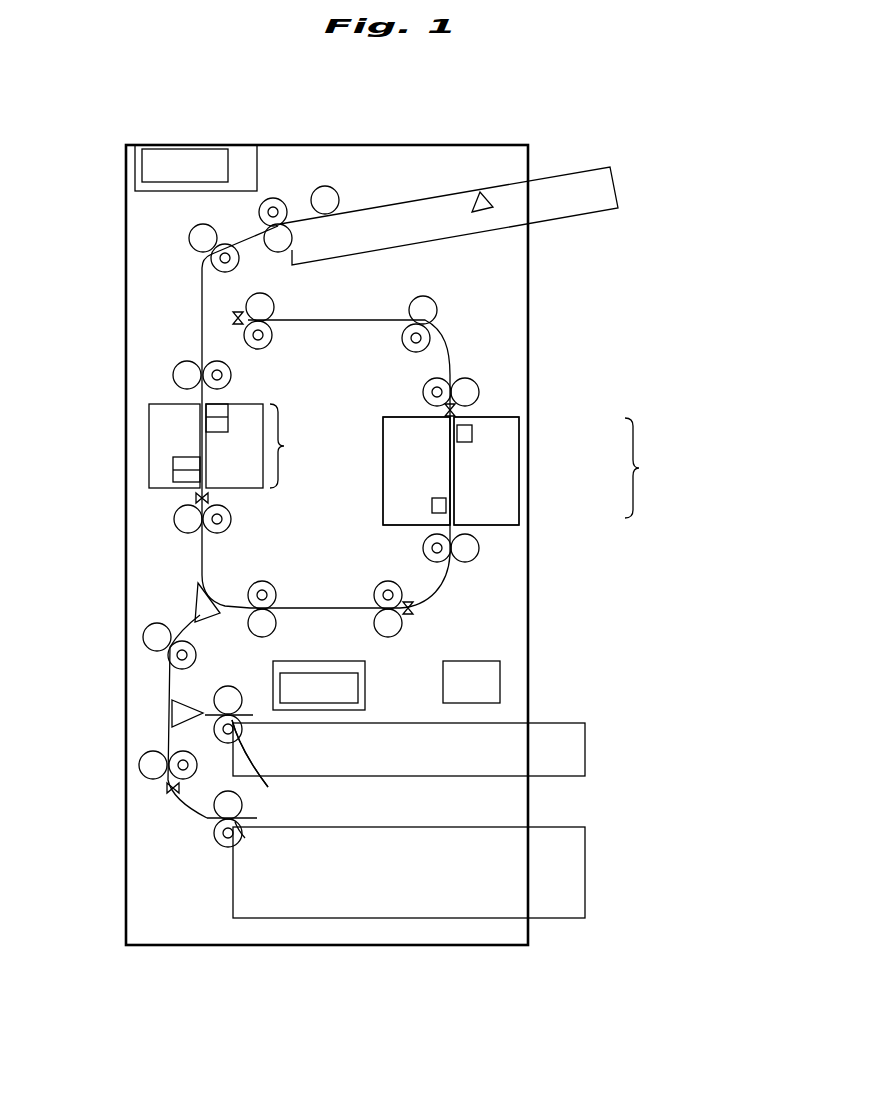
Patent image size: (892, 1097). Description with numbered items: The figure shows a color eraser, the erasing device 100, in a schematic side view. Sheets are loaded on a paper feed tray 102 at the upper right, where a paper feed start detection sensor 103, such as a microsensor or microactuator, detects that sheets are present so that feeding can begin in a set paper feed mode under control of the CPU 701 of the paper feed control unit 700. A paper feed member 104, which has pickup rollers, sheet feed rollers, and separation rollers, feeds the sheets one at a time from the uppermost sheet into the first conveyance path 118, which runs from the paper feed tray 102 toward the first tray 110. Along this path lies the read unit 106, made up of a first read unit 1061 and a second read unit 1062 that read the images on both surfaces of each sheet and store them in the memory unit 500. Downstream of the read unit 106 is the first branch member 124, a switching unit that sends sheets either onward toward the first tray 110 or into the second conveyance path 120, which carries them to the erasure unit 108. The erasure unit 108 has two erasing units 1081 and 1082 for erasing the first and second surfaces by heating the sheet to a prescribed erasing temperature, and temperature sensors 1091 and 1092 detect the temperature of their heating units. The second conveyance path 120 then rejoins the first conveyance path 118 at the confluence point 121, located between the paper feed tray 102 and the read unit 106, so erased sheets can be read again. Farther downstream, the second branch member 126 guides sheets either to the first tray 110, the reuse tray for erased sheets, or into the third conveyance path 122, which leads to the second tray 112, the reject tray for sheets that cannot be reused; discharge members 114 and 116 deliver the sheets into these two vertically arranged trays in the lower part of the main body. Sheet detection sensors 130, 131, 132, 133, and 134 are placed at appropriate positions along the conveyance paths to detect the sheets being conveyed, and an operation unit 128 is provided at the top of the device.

The erasing device 100 is at (655, 236).
The paper feed tray 102 is at (573, 166).
The paper feed start detection sensor 103 is at (481, 190).
The paper feed member 104 is at (273, 197).
The read unit 106 is at (190, 424).
The first read unit 1061 is at (174, 470).
The second read unit 1062 is at (202, 421).
The erasure unit 108 is at (496, 451).
The erasing unit 1081 is at (452, 468).
The erasing unit 1082 is at (510, 480).
The temperature sensor 1091 is at (432, 503).
The temperature sensor 1092 is at (472, 427).
The first tray 110 is at (585, 746).
The second tray 112 is at (585, 864).
The discharge member 114 is at (258, 770).
The discharge member 116 is at (212, 834).
The first conveyance path 118 is at (200, 269).
The second conveyance path 120 is at (302, 608).
The confluence point 121 is at (186, 374).
The third conveyance path 122 is at (167, 741).
The first branch member 124 is at (196, 591).
The second branch member 126 is at (172, 714).
The operation unit 128 is at (192, 165).
The sheet detection sensor 130 is at (196, 499).
The sheet detection sensor 131 is at (408, 627).
The sheet detection sensor 132 is at (470, 405).
The sheet detection sensor 133 is at (240, 312).
The sheet detection sensor 134 is at (170, 791).
The memory unit 500 is at (492, 688).
The paper feed control unit 700 is at (358, 684).
The CPU 701 is at (350, 694).